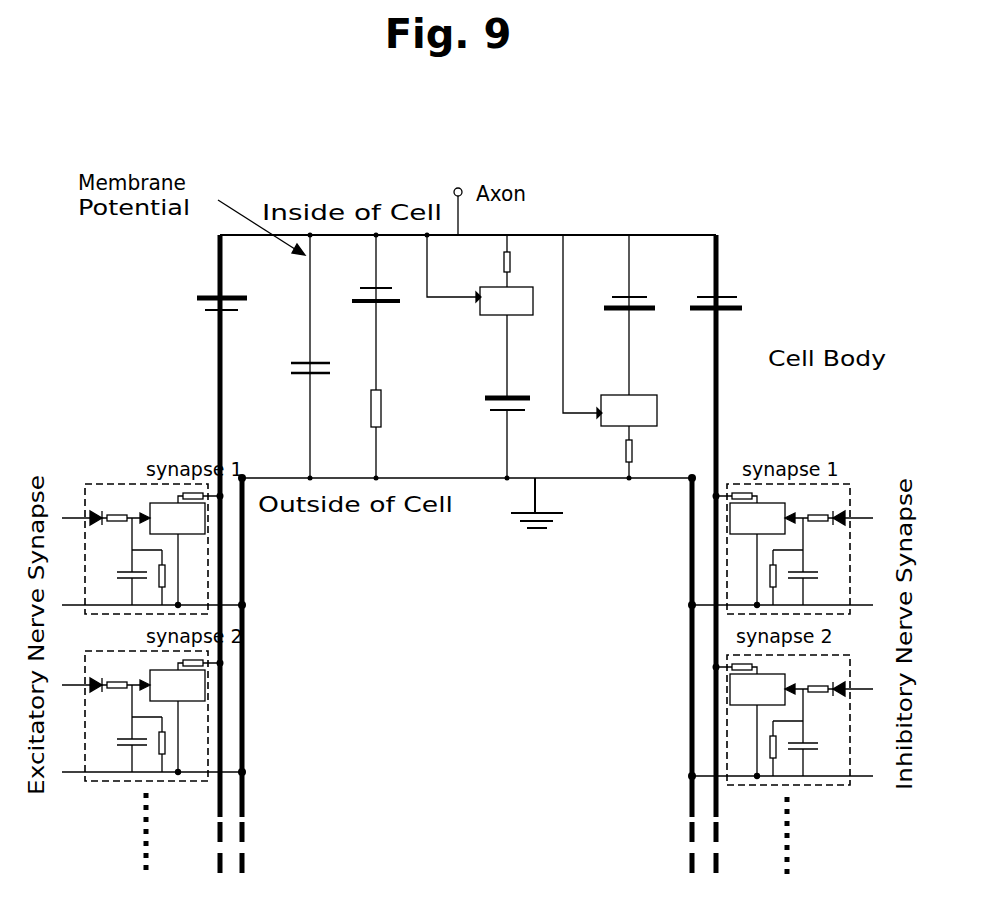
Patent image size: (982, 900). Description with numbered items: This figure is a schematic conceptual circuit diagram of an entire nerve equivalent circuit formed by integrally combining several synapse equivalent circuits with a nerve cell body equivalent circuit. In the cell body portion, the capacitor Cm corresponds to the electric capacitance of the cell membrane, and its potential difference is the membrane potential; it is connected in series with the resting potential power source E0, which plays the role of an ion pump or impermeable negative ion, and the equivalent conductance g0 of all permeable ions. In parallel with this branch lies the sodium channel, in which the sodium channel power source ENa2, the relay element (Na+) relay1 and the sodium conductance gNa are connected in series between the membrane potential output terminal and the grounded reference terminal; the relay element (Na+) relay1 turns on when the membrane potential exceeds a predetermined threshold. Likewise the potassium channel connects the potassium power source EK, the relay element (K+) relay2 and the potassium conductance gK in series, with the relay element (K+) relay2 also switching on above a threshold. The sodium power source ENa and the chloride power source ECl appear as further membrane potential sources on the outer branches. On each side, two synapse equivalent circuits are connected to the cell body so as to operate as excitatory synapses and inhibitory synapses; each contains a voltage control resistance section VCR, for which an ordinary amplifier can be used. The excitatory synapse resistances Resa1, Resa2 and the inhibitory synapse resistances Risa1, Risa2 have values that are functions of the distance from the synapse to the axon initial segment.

The sodium power source ENa is at (199, 302).
The capacitor Cm is at (291, 356).
The resting potential power source E0 is at (359, 356).
The equivalent conductance g0 is at (362, 410).
The sodium conductance gNa is at (529, 261).
The relay element (Na+) relay1 is at (506, 301).
The sodium channel power source ENa2 is at (482, 396).
The relay element (K+) relay2 is at (629, 410).
The potassium power source EK is at (612, 315).
The potassium conductance gK is at (647, 452).
The chloride power source ECl is at (739, 306).
The voltage control resistance section VCR is at (467, 604).
The excitatory synapse resistance Resa1 is at (173, 491).
The excitatory synapse resistance Resa2 is at (173, 658).
The inhibitory synapse resistance Risa1 is at (768, 491).
The inhibitory synapse resistance Risa2 is at (768, 662).